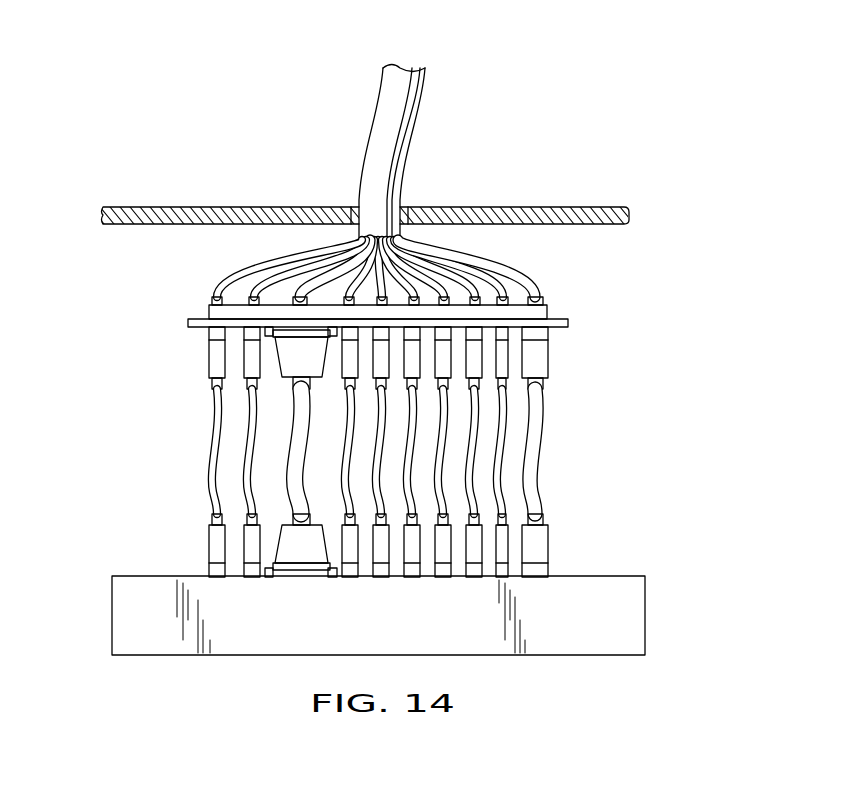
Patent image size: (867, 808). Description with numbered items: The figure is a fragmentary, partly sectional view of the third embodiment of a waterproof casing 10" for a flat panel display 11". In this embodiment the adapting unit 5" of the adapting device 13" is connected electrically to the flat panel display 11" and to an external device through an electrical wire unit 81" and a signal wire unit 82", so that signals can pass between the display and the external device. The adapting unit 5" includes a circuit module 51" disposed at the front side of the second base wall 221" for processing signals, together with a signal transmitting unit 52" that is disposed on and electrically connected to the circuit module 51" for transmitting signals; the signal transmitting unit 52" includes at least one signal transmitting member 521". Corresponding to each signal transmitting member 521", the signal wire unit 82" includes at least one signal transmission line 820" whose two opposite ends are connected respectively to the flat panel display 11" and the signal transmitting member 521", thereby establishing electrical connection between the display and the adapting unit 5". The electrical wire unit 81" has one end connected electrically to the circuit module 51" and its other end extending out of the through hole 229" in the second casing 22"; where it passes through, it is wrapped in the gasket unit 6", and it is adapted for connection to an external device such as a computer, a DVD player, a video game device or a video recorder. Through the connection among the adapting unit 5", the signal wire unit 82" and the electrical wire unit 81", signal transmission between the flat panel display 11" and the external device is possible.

The waterproof casing 10 is at (136, 116).
The electrical wire unit 81 is at (366, 250).
The gasket unit 6 is at (357, 206).
The through hole 229 is at (438, 208).
The second base wall 221 is at (576, 219).
The second casing 22 is at (630, 207).
The adapting device 13 is at (94, 284).
The adapting unit 5 is at (172, 311).
The signal transmitting unit 52 is at (214, 338).
The circuit module 51 is at (569, 324).
The signal transmitting member 521 is at (502, 338).
The signal transmission line 820 is at (506, 432).
The signal wire unit 82 is at (550, 467).
The flat panel display 11 is at (620, 613).